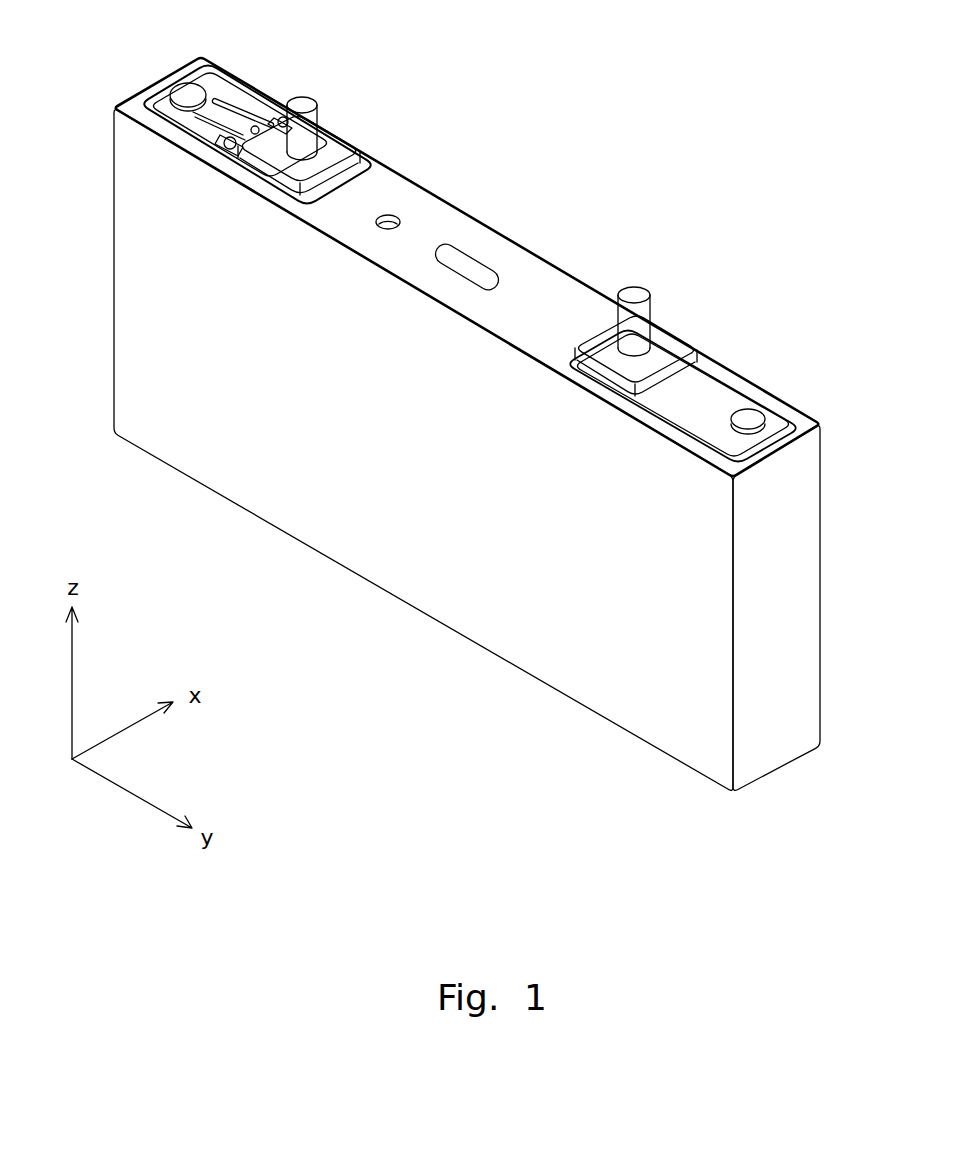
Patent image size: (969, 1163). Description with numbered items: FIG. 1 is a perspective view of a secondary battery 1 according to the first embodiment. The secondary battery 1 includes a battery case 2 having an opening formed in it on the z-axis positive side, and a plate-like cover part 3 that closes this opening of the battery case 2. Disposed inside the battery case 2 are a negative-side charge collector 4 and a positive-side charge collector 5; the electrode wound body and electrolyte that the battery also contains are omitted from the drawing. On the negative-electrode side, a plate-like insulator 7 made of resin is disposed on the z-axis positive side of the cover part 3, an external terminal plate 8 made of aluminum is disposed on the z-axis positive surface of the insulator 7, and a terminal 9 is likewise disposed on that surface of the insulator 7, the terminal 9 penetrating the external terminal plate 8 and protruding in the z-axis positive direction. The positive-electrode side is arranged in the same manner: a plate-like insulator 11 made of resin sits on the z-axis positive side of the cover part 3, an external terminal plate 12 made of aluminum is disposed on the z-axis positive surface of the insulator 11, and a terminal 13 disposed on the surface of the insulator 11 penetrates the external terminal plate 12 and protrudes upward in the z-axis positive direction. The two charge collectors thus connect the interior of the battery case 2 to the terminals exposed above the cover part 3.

The secondary battery 1 is at (814, 83).
The battery case 2 is at (790, 594).
The cover part 3 is at (532, 275).
The negative-side charge collector 4 is at (748, 418).
The positive-side charge collector 5 is at (188, 92).
The insulator 7 is at (782, 440).
The external terminal plate 8 is at (712, 388).
The terminal 9 is at (637, 295).
The insulator 11 is at (362, 172).
The external terminal plate 12 is at (233, 97).
The terminal 13 is at (303, 102).